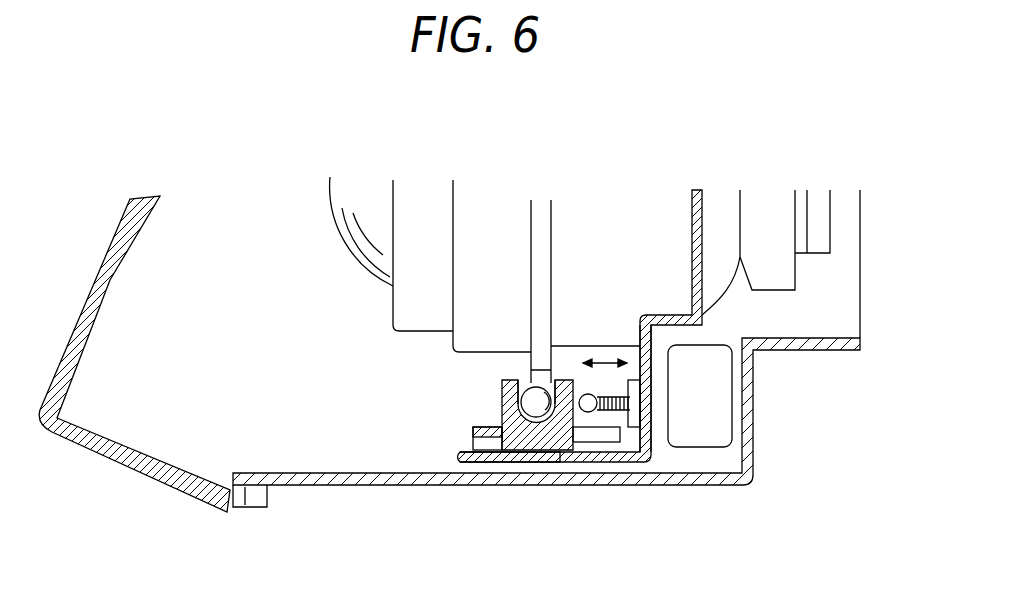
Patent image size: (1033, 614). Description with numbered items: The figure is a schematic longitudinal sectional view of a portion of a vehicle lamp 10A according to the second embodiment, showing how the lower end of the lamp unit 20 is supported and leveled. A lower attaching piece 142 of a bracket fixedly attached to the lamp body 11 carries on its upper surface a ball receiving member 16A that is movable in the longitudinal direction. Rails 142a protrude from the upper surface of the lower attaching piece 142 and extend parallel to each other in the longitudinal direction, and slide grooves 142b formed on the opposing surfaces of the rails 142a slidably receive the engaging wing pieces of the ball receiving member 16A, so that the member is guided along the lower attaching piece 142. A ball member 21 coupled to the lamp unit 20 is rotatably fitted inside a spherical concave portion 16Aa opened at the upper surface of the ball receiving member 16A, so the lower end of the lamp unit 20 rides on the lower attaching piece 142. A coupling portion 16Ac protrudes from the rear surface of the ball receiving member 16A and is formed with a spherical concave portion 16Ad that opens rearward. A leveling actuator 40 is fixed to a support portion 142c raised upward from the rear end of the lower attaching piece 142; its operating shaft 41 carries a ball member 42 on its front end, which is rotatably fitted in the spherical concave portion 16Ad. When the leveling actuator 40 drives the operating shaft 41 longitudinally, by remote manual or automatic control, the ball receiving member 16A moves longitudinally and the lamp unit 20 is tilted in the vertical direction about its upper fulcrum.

The vehicle lamp 10A is at (111, 186).
The lamp unit 20 is at (333, 233).
The ball member 21 is at (521, 392).
The ball receiving member 16A is at (502, 398).
The spherical concave portion 16Aa is at (556, 381).
The coupling portion 16Ac is at (600, 372).
The spherical concave portion 16Ad is at (583, 442).
The operating shaft 41 is at (660, 390).
The ball member 42 is at (637, 452).
The leveling actuator 40 is at (733, 417).
The lamp body 11 is at (357, 490).
The lower attaching piece 142 is at (610, 465).
The rails 142a is at (473, 432).
The slide grooves 142b is at (483, 462).
The support portion 142c is at (653, 410).